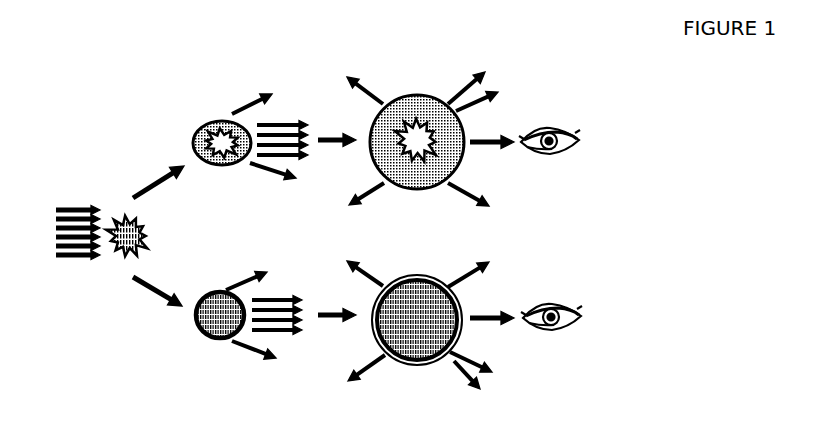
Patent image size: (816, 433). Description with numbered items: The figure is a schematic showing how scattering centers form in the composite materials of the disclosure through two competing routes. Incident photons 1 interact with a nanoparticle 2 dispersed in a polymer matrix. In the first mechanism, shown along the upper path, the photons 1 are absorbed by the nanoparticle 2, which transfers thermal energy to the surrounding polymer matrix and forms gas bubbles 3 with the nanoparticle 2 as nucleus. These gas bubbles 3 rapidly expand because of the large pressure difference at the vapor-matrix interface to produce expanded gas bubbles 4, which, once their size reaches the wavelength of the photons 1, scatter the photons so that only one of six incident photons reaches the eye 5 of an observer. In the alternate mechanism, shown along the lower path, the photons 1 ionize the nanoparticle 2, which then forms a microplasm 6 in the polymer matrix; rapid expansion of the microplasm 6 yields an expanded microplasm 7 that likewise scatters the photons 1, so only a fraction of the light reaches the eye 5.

The photons 1 is at (58, 233).
The nanoparticle 2 is at (139, 236).
The gas bubbles 3 is at (242, 137).
The expanded gas bubbles 4 is at (430, 134).
The eye 5 is at (567, 229).
The microplasm 6 is at (240, 317).
The expanded microplasm 7 is at (430, 328).